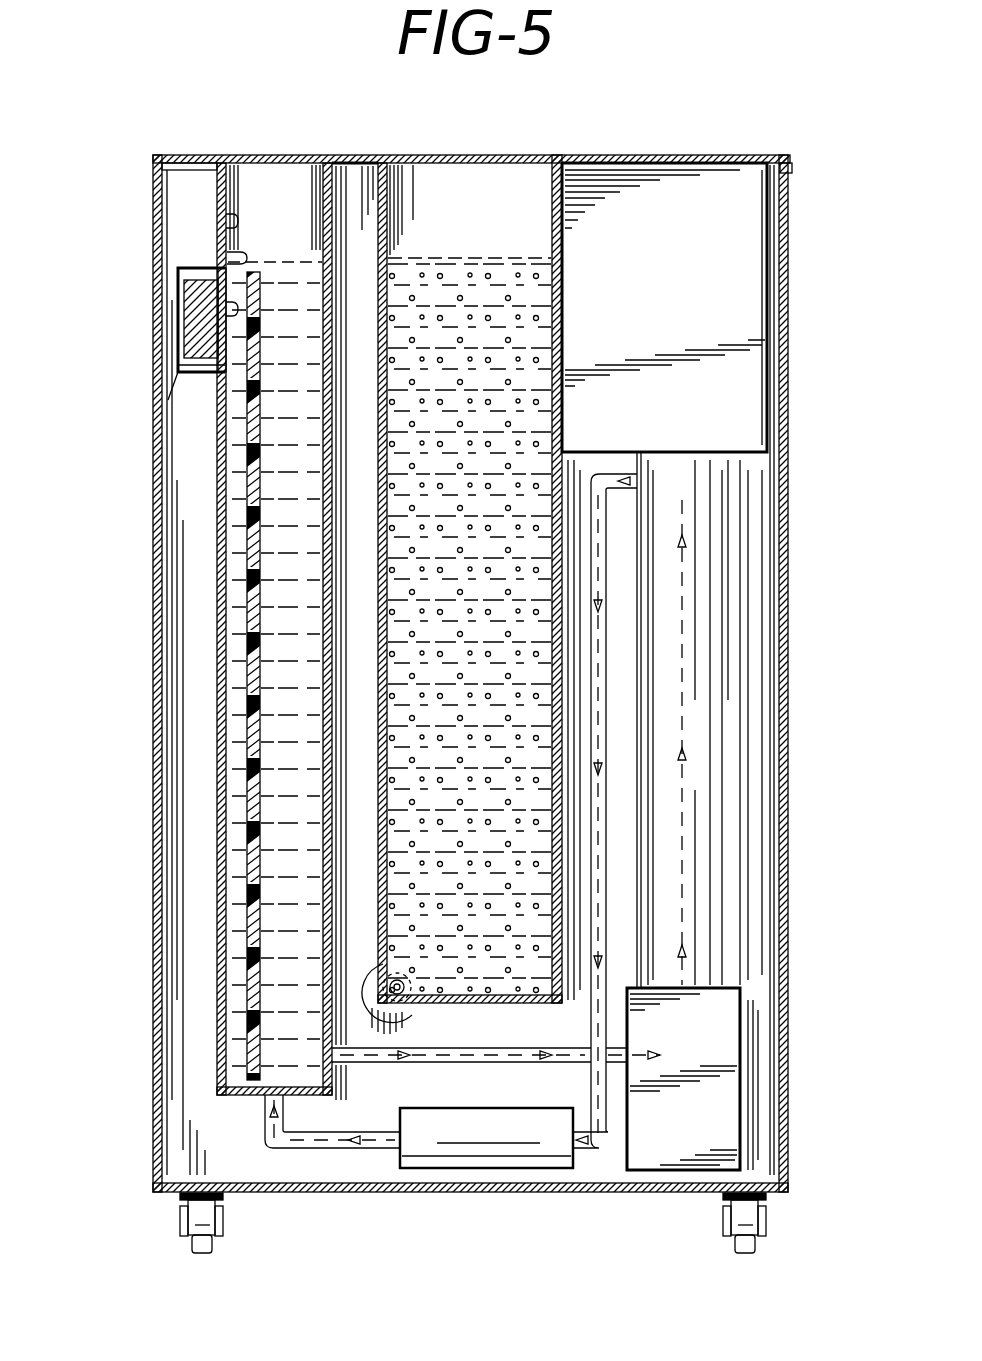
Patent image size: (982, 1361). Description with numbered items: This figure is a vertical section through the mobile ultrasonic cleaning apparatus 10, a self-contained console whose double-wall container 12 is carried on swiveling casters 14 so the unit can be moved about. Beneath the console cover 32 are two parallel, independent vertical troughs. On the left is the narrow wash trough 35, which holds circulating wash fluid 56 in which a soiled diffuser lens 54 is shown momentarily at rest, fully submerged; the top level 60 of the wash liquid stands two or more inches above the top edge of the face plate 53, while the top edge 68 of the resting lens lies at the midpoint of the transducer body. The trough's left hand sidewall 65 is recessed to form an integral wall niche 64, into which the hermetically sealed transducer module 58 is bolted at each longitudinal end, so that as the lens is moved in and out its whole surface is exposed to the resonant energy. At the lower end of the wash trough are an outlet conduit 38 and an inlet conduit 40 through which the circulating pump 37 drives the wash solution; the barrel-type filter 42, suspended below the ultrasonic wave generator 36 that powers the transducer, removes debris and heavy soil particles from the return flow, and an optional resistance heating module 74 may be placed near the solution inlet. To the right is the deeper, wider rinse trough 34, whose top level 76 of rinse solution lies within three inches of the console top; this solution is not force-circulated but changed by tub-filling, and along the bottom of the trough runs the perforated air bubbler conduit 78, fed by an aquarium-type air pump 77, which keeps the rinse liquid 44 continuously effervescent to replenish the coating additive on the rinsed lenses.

The mobile ultrasonic cleaning apparatus 10 is at (428, 605).
The double-wall container 12 is at (157, 912).
The casters 14 is at (185, 1240).
The console cover 32 is at (183, 157).
The rinse trough 34 is at (512, 207).
The wash trough 35 is at (272, 195).
The ultrasonic wave generator 36 is at (698, 280).
The circulating pump 37 is at (720, 1063).
The outlet conduit 38 is at (505, 1065).
The inlet conduit 40 is at (345, 1150).
The barrel-type filter 42 is at (690, 685).
The rinse liquid 44 is at (552, 788).
The face plate 53 is at (236, 320).
The diffuser lens 54 is at (247, 620).
The wash fluid 56 is at (234, 520).
The transducer module 58 is at (204, 333).
The top level 60 is at (305, 250).
The wall niche 64 is at (182, 372).
The left hand sidewall 65 is at (232, 232).
The top edge 68 is at (244, 266).
The resistance heating module 74 is at (455, 1150).
The top level 76 is at (462, 256).
The air pump 77 is at (405, 1005).
The air bubbler conduit 78 is at (404, 982).